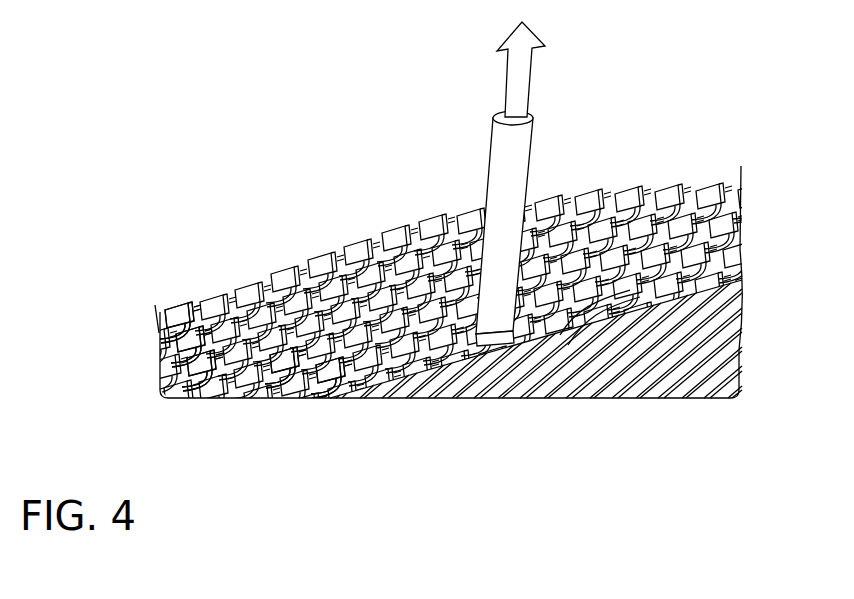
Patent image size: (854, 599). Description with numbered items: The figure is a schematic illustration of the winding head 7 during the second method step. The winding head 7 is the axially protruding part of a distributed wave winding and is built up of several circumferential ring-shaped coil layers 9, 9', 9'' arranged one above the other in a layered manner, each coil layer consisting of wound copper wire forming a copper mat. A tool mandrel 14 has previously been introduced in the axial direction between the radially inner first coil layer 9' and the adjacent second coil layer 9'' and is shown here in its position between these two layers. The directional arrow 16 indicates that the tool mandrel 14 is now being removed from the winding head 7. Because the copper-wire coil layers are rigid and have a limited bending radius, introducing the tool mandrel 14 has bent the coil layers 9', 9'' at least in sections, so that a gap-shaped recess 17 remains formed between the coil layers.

The winding head 7 is at (625, 256).
The coil layer 9 is at (157, 346).
The radially inner first coil layer 9' is at (331, 405).
The second coil layer 9'' is at (284, 400).
The tool mandrel 14 is at (517, 167).
The directional arrow 16 is at (518, 84).
The gap-shaped recess 17 is at (556, 330).